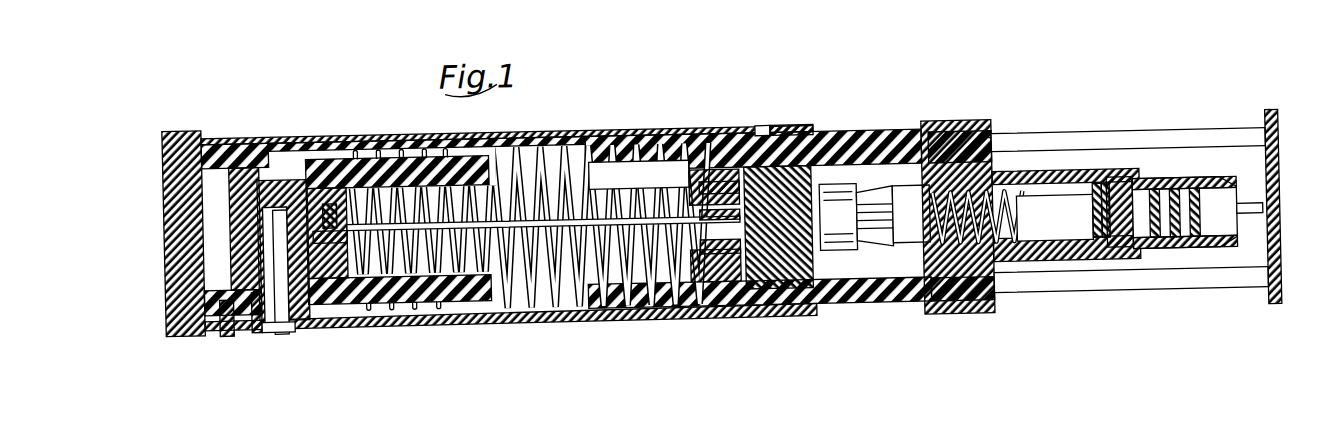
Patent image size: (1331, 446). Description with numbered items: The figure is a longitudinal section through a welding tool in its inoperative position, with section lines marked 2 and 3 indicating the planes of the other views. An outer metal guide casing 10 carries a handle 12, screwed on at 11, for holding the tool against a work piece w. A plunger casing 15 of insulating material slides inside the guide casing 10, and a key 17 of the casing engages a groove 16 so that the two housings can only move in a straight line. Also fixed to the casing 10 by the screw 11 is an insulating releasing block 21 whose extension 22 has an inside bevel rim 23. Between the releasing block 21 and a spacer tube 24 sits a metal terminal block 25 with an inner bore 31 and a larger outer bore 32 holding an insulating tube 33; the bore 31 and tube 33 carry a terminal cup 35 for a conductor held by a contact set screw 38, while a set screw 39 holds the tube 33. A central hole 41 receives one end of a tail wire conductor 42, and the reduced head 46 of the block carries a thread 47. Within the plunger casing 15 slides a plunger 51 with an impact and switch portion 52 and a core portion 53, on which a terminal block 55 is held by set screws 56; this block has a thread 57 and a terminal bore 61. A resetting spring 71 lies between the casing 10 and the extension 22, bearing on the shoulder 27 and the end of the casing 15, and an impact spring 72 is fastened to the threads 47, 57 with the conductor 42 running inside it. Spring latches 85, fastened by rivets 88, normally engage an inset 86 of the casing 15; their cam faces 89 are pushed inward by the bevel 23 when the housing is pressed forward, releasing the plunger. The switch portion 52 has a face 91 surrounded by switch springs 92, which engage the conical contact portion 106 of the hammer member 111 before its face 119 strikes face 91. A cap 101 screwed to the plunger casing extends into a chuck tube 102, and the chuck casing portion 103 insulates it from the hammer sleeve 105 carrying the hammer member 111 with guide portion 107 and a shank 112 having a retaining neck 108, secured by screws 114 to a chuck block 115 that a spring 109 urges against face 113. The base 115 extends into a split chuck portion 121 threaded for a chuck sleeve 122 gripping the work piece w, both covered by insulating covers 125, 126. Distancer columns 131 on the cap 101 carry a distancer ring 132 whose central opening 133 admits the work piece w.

The guide casing 10 is at (673, 132).
The screw 11 is at (230, 323).
The handle 12 is at (169, 121).
The plunger casing 15 is at (827, 136).
The groove 16 is at (860, 303).
The key 17 is at (792, 305).
The releasing block 21 is at (227, 177).
The extension 22 is at (477, 318).
The bevel rim 23 is at (512, 303).
The spacer tube 24 is at (203, 176).
The terminal block 25 is at (298, 178).
The shoulder 27 is at (340, 179).
The inner bore 31 is at (300, 178).
The outer bore 32 is at (277, 328).
The insulating tube 33 is at (272, 327).
The terminal cup 35 is at (285, 321).
The contact set screw 38 is at (257, 177).
The set screw 39 is at (185, 279).
The central hole 41 is at (378, 150).
The tail wire conductor 42 is at (525, 183).
The reduced head 46 is at (350, 313).
The thread 47 is at (352, 307).
The plunger 51 is at (818, 306).
The impact and switch portion 52 is at (837, 207).
The core portion 53 is at (778, 139).
The terminal block 55 is at (737, 310).
The set screws 56 is at (763, 304).
The thread 57 is at (720, 307).
The terminal bore 61 is at (703, 140).
The resetting spring 71 is at (558, 317).
The impact spring 72 is at (580, 307).
The spring latches 85 is at (667, 307).
The inset 86 is at (637, 139).
The rivets 88 is at (740, 298).
The cam faces 89 is at (633, 306).
The face 91 is at (827, 300).
The switch springs 92 is at (905, 301).
The cap 101 is at (967, 309).
The chuck tube 102 is at (1065, 275).
The chuck casing portion 103 is at (1107, 269).
The hammer sleeve 105 is at (1023, 300).
The contact portion 106 is at (887, 141).
The guide portion 107 is at (913, 138).
The retaining neck 108 is at (1113, 196).
The spring 109 is at (1010, 230).
The hammer member 111 is at (920, 305).
The shank 112 is at (1045, 210).
The face 113 is at (1062, 195).
The screws 114 is at (1088, 196).
The chuck block 115 is at (1095, 266).
The face 119 is at (867, 191).
The split chuck portion 121 is at (1167, 183).
The chuck sleeve 122 is at (1200, 273).
The insulating cover 125 is at (1193, 264).
The insulating cover 126 is at (1173, 260).
The distancer columns 131 is at (1237, 150).
The distancer ring 132 is at (1285, 266).
The central opening 133 is at (1297, 234).
The work piece w is at (1253, 226).
The section line 2- 2 is at (850, 93).
The section line 3- 3 is at (618, 94).